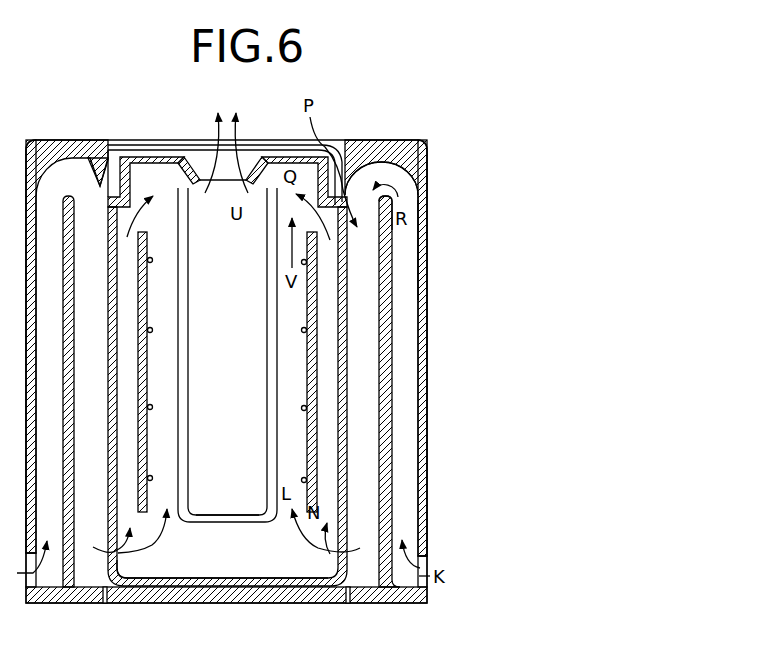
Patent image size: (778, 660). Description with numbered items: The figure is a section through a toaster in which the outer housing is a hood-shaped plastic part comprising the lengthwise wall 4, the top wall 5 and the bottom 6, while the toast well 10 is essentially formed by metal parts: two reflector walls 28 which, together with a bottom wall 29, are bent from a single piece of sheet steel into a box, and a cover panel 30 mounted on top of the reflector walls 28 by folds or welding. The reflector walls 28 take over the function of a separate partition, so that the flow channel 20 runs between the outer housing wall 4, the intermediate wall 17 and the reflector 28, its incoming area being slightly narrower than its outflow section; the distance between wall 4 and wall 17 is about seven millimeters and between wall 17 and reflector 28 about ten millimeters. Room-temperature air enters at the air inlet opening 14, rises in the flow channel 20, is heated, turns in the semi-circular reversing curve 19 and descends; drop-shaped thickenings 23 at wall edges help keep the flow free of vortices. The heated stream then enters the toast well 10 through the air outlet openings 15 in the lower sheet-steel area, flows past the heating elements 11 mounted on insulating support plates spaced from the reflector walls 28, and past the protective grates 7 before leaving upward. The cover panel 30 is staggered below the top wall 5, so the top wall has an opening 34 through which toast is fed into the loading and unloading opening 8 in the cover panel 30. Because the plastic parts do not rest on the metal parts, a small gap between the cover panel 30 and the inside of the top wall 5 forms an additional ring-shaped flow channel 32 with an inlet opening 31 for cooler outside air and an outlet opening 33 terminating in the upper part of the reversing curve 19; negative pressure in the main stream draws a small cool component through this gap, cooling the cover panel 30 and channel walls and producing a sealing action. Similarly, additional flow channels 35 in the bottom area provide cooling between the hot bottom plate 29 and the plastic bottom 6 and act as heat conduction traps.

The lengthwise wall 4 is at (421, 386).
The top wall 5 is at (374, 139).
The bottom 6 is at (223, 604).
The protective grate 7 is at (182, 309).
The loading and unloading opening 8 is at (244, 165).
The toast well 10 is at (238, 484).
The heating element 11 is at (153, 331).
The air inlet opening 14 is at (420, 567).
The air outlet opening 15 is at (118, 565).
The intermediate wall 17 is at (387, 355).
The reversing curve 19 is at (405, 182).
The flow channel 20 is at (406, 254).
The drop-shaped thickening 23 is at (389, 197).
The reflector wall 28 is at (118, 436).
The bottom wall 29 is at (186, 578).
The cover panel 30 is at (165, 160).
The inlet opening 31 is at (133, 152).
The flow channel 32 is at (117, 158).
The outlet opening 33 is at (108, 193).
The opening 34 is at (273, 139).
The flow channel 35 is at (105, 603).